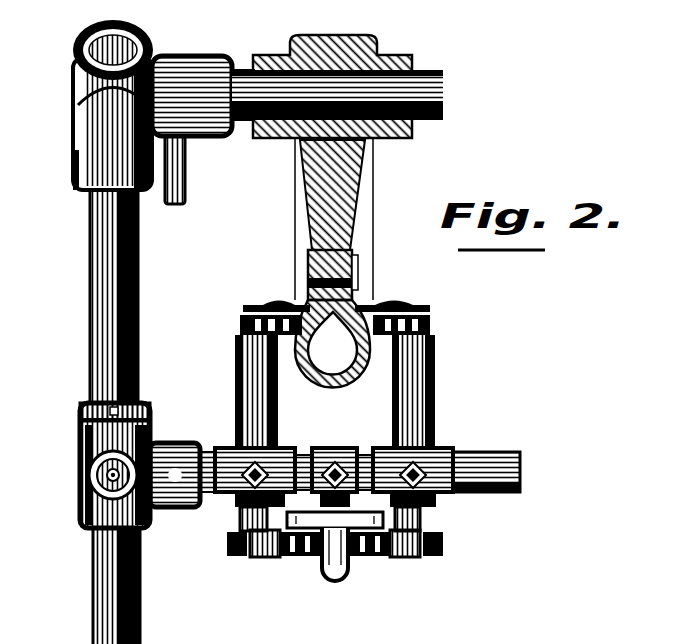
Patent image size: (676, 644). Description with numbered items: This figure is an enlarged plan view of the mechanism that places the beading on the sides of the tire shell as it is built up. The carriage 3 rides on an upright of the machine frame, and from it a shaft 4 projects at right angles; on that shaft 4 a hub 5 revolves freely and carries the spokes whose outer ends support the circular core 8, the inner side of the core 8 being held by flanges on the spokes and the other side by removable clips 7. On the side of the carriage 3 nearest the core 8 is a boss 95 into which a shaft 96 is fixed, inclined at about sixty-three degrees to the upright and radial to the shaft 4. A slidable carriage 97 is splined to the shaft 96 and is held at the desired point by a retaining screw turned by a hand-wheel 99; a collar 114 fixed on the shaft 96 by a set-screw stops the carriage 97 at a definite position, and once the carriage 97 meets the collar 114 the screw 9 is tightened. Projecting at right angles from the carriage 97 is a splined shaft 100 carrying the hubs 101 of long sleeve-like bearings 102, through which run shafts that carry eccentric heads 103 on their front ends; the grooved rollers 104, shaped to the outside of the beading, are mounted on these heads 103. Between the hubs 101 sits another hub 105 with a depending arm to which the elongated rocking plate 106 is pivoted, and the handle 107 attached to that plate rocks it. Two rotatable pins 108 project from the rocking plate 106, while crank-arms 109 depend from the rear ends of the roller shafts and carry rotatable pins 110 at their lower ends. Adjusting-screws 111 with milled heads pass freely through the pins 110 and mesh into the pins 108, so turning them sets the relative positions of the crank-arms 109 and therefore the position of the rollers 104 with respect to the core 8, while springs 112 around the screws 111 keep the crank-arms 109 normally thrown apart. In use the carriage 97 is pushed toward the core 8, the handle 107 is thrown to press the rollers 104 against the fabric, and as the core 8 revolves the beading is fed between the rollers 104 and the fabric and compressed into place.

The carriage 3 is at (74, 105).
The shaft 4 is at (443, 88).
The hub 5 is at (393, 52).
The clips 7 is at (359, 272).
The core 8 is at (332, 344).
The screw 9 is at (186, 172).
The boss 95 is at (75, 166).
The shaft 96 is at (129, 586).
The slidable carriage 97 is at (82, 503).
The hand-wheel 99 is at (88, 463).
The splined shaft 100 is at (520, 460).
The hubs 101 is at (220, 448).
The sleeve-like bearings 102 is at (236, 368).
The eccentric heads 103 is at (241, 326).
The rollers 104 is at (252, 312).
The hub 105 is at (334, 467).
The rocking plate 106 is at (430, 518).
The handle 107 is at (335, 570).
The rotatable pins 108 is at (333, 547).
The crank-arms 109 is at (240, 522).
The rotatable pins 110 is at (428, 562).
The adjusting-screws 111 is at (227, 547).
The springs 112 is at (283, 556).
The collar 114 is at (82, 412).